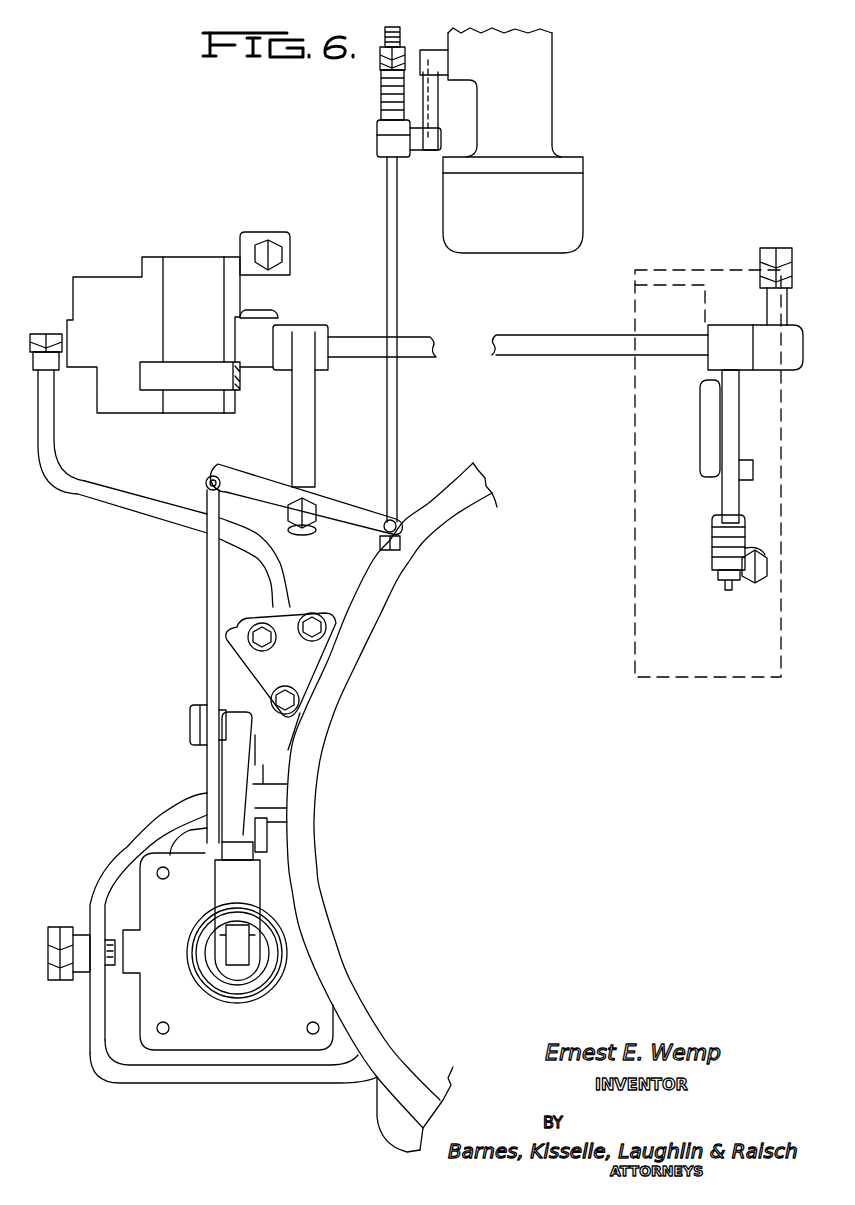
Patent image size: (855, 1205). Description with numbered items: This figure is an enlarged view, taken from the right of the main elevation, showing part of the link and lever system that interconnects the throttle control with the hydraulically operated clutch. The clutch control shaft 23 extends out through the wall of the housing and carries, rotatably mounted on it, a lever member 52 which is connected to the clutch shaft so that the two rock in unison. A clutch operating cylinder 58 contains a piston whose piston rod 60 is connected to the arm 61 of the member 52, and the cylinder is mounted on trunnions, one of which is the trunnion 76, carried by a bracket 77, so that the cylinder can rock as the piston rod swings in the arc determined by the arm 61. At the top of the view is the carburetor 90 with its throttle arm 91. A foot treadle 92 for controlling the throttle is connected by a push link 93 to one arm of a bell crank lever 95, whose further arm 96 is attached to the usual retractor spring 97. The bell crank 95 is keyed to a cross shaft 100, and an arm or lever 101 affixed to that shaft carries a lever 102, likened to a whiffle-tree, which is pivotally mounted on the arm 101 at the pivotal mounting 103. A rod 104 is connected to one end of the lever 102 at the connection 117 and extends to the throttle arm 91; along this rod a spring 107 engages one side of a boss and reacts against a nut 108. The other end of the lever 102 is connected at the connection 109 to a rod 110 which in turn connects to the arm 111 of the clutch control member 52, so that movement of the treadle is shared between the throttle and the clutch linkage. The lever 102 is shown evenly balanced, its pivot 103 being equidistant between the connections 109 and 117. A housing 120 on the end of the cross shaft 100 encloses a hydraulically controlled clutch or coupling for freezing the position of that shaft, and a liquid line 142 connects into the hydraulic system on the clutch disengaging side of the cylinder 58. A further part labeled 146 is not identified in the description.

The clutch control shaft 23 is at (190, 715).
The lever member 52 is at (255, 745).
The clutch operating cylinder 58 is at (150, 998).
The piston rod 60 is at (240, 965).
The arm 61 is at (262, 910).
The trunnion 76 is at (108, 895).
The bracket 77 is at (122, 866).
The carburetor 90 is at (580, 185).
The throttle arm 91 is at (432, 95).
The foot treadle 92 is at (670, 290).
The push link 93 is at (705, 422).
The bell crank lever 95 is at (745, 316).
The arm 96 is at (737, 432).
The retractor spring 97 is at (715, 558).
The cross shaft 100 is at (560, 336).
The arm 101 is at (302, 414).
The lever 102 is at (370, 482).
The pivotal mounting 103 is at (302, 534).
The rod 104 is at (392, 447).
The spring 107 is at (378, 75).
The nut 108 is at (400, 60).
The connection 109 is at (205, 485).
The rod 110 is at (207, 588).
The arm 111 is at (237, 825).
The connection 117 is at (392, 552).
The housing 120 is at (195, 275).
The liquid line 142 is at (78, 482).
The valve housing 146 is at (100, 285).